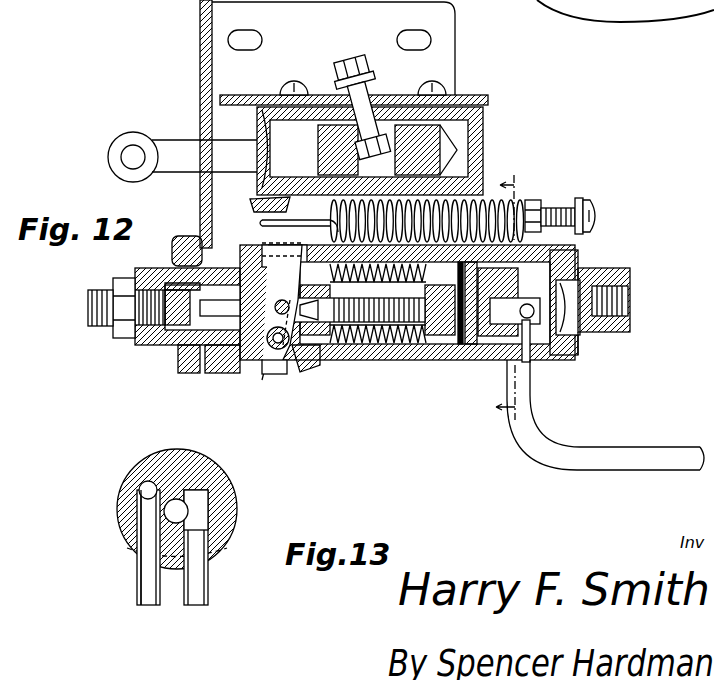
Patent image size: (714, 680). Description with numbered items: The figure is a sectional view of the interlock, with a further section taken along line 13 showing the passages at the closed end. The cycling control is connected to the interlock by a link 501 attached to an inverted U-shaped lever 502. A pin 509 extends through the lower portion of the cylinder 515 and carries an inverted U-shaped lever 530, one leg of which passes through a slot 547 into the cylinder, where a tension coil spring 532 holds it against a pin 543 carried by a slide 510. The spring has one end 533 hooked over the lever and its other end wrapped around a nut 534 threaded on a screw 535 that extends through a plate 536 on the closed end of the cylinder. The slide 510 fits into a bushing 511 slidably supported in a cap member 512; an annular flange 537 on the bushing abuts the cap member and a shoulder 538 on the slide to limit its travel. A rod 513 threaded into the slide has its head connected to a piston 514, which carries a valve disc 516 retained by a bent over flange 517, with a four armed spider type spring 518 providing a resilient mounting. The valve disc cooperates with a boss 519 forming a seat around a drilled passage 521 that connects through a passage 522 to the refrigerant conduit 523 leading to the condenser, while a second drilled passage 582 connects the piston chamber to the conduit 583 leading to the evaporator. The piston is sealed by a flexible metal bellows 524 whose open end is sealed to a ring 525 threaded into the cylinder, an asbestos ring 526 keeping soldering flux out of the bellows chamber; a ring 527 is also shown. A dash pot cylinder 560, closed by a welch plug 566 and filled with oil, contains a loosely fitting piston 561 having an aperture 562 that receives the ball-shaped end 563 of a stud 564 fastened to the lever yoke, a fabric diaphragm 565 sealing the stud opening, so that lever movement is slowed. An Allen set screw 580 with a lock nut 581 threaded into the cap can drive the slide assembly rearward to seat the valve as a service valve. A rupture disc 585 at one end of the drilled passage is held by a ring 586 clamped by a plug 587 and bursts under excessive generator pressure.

In FIG. 12, the section line 13 is at (515, 296).
In FIG. 12, the link 501 is at (178, 150).
In FIG. 12, the inverted U-shaped lever 502 is at (368, 95).
In FIG. 12, the pin 509 is at (270, 350).
In FIG. 12, the slide 510 is at (165, 284).
In FIG. 12, the bushing 511 is at (158, 350).
In FIG. 12, the cap member 512 is at (140, 348).
In FIG. 12, the rod 513 is at (398, 352).
In FIG. 12, the piston 514 is at (422, 362).
In FIG. 12, the cylinder 515 is at (354, 358).
In FIG. 12, the valve disc 516 is at (466, 360).
In FIG. 12, the bent over flange 517 is at (457, 360).
In FIG. 12, the four armed spider type spring 518 is at (432, 360).
In FIG. 12, the boss 519 is at (490, 360).
In FIG. 12, the drilled passage 521 is at (526, 362).
In FIG. 13, the drilled passage 521 is at (178, 500).
In FIG. 12, the passage 522 is at (540, 345).
In FIG. 13, the passage 522 is at (188, 512).
In FIG. 12, the refrigerant conduit 523 is at (555, 444).
In FIG. 13, the refrigerant conduit 523 is at (210, 585).
In FIG. 12, the flexible metal bellows 524 is at (374, 360).
In FIG. 12, the ring 525 is at (277, 378).
In FIG. 12, the asbestos ring 526 is at (312, 370).
In FIG. 12, the collar 527 is at (328, 360).
In FIG. 12, the inverted U-shaped lever 530 is at (192, 374).
In FIG. 12, the tension coil spring 532 is at (482, 207).
In FIG. 12, the spring end 533 is at (262, 208).
In FIG. 12, the nut 534 is at (533, 206).
In FIG. 12, the screw 535 is at (560, 216).
In FIG. 12, the plate 536 is at (597, 228).
In FIG. 12, the annular flange 537 is at (182, 265).
In FIG. 12, the shoulder 538 is at (228, 378).
In FIG. 12, the pin 543 is at (275, 308).
In FIG. 12, the slot 547 is at (298, 244).
In FIG. 12, the cylinder 560 is at (468, 120).
In FIG. 12, the piston 561 is at (448, 130).
In FIG. 12, the aperture 562 is at (312, 176).
In FIG. 12, the ball-shaped end 563 is at (440, 98).
In FIG. 12, the stud 564 is at (384, 128).
In FIG. 12, the fabric diaphragm 565 is at (342, 96).
In FIG. 12, the welch plug 566 is at (202, 103).
In FIG. 12, the Allen set screw 580 is at (92, 306).
In FIG. 12, the lock nut 581 is at (118, 338).
In FIG. 13, the drilled passage 582 is at (148, 482).
In FIG. 13, the conduit 583 is at (135, 582).
In FIG. 12, the rupture disc 585 is at (606, 280).
In FIG. 12, the ring 586 is at (574, 262).
In FIG. 12, the plug 587 is at (615, 350).